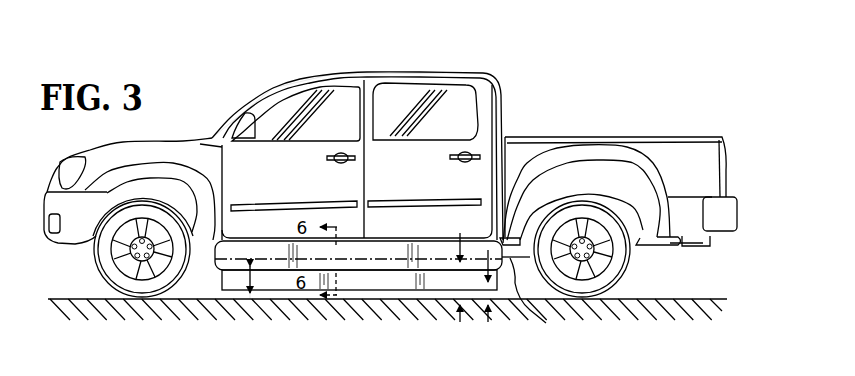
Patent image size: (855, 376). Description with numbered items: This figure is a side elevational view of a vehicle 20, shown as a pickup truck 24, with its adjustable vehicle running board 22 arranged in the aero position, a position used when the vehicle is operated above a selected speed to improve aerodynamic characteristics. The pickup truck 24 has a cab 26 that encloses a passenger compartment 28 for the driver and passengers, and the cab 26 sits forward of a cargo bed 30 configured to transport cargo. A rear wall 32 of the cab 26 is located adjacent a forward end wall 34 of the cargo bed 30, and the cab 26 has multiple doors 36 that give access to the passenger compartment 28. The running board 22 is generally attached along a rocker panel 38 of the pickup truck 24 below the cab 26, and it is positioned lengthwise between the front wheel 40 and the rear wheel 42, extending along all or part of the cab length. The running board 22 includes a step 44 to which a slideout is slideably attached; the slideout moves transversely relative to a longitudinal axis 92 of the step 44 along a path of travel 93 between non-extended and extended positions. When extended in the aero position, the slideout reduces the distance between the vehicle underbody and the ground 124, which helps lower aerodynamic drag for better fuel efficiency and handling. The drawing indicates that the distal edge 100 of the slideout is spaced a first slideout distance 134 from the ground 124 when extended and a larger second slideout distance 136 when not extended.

The vehicle 20 is at (616, 90).
The adjustable vehicle running board 22 is at (214, 270).
The pickup truck 24 is at (418, 66).
The cab 26 is at (250, 110).
The passenger compartment 28 is at (305, 80).
The cargo bed 30 is at (697, 137).
The rear wall 32 is at (498, 92).
The forward end wall 34 is at (503, 128).
The doors 36 is at (220, 157).
The rocker panel 38 is at (531, 300).
The front wheel 40 is at (95, 277).
The rear wheel 42 is at (630, 271).
The step 44 is at (237, 290).
The longitudinal axis 92 is at (390, 260).
The path of travel 93 is at (260, 290).
The distal edge 100 is at (277, 290).
The ground 124 is at (707, 299).
The first slideout distance 134 is at (488, 323).
The second slideout distance 136 is at (460, 323).